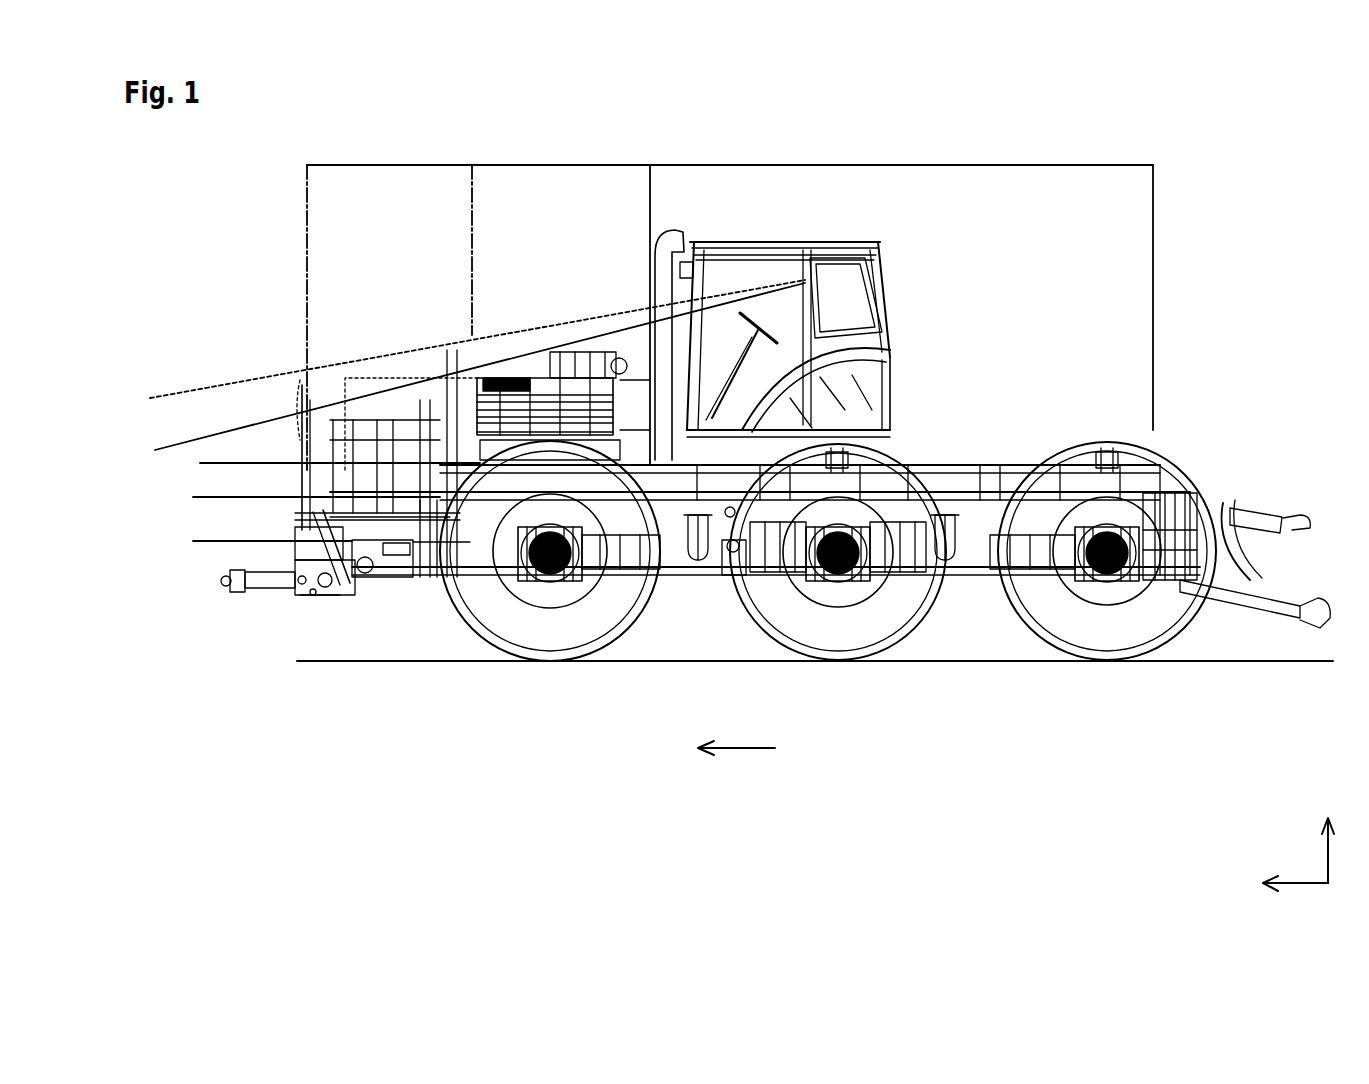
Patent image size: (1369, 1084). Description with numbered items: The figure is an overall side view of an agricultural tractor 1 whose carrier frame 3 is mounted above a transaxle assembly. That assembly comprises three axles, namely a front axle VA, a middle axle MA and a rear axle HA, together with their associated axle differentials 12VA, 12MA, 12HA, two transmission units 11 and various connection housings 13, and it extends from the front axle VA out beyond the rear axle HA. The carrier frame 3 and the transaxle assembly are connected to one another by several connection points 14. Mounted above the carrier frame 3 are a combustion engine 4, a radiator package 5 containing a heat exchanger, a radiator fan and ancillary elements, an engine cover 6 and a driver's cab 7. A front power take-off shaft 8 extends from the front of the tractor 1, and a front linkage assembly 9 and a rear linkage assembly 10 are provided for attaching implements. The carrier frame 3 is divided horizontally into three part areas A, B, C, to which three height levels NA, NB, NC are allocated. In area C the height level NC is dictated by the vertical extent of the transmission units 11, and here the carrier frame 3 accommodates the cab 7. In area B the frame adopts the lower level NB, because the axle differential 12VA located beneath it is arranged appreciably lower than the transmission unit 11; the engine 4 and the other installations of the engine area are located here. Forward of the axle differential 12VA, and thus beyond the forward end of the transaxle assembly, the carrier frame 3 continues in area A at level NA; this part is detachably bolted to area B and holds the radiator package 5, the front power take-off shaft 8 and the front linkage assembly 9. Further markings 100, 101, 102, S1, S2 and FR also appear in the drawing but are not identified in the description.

The tractor 1 is at (730, 293).
The carrier frame 3 is at (747, 448).
The combustion engine 4 is at (563, 348).
The radiator package 5 is at (388, 388).
The engine cover 6 is at (321, 394).
The driver's cab 7 is at (814, 345).
The front power take-off shaft 8 is at (290, 640).
The front linkage assembly 9 is at (228, 651).
The rear linkage assembly 10 is at (1236, 609).
The transmission units 11 is at (835, 630).
The front axle differential 12VA is at (580, 640).
The middle axle differential 12MA is at (880, 645).
The rear axle differential 12HA is at (1144, 631).
The connection housings 13 is at (906, 586).
The connection points 14 is at (972, 418).
The front hitch lower part 100 is at (347, 680).
The front hitch plate 101 is at (270, 667).
The front hitch strut 102 is at (291, 435).
The front axle VA is at (550, 603).
The middle axle MA is at (838, 600).
The rear axle HA is at (1107, 603).
The height level NA is at (256, 542).
The height level NB is at (300, 497).
The height level NC is at (322, 462).
The sight line 1 S1 is at (445, 366).
The sight line 2 S2 is at (463, 407).
The part area A is at (386, 184).
The part area B is at (559, 185).
The part area C is at (911, 189).
The forward direction FR is at (1023, 816).